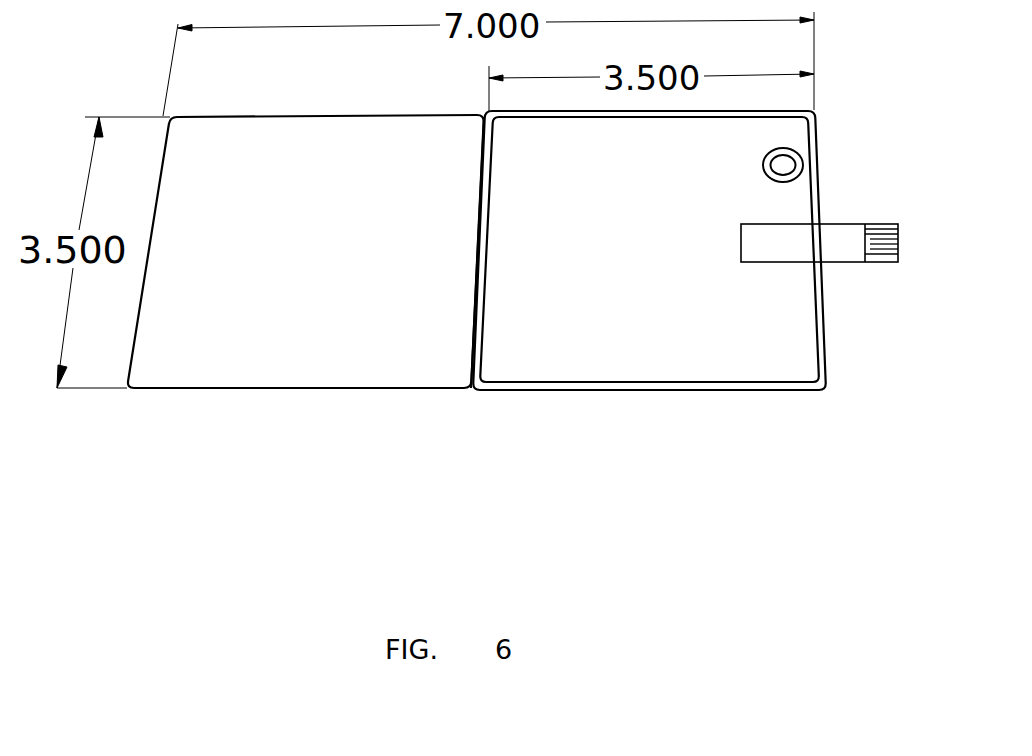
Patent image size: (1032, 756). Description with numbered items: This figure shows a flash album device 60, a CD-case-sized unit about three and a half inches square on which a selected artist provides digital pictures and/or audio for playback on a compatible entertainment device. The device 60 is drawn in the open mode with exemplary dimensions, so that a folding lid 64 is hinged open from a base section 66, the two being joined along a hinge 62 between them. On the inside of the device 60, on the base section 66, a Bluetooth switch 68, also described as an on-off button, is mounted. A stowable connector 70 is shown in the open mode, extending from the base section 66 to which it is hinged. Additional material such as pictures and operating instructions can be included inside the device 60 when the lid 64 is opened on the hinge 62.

The flash album device 60 is at (529, 335).
The hinge 62 is at (470, 393).
The folding lid 64 is at (260, 299).
The base section 66 is at (636, 298).
The Bluetooth switch 68 is at (763, 173).
The stowable connector 70 is at (897, 231).